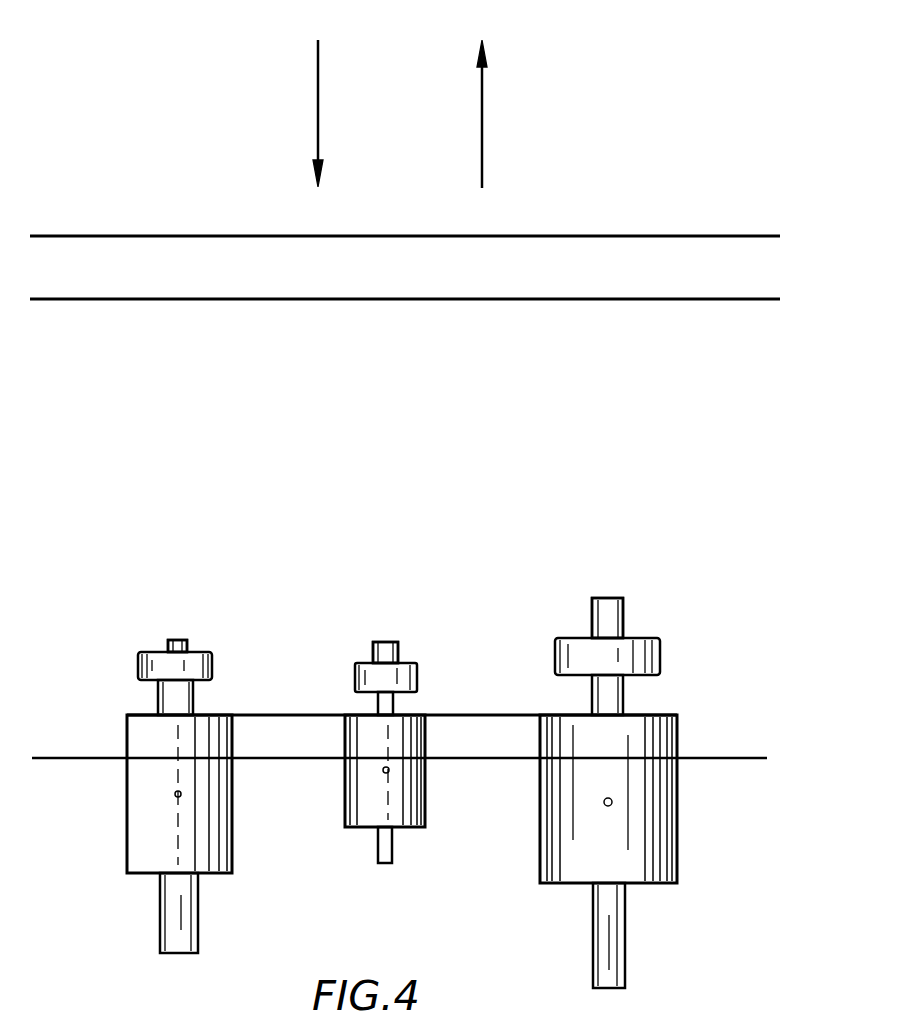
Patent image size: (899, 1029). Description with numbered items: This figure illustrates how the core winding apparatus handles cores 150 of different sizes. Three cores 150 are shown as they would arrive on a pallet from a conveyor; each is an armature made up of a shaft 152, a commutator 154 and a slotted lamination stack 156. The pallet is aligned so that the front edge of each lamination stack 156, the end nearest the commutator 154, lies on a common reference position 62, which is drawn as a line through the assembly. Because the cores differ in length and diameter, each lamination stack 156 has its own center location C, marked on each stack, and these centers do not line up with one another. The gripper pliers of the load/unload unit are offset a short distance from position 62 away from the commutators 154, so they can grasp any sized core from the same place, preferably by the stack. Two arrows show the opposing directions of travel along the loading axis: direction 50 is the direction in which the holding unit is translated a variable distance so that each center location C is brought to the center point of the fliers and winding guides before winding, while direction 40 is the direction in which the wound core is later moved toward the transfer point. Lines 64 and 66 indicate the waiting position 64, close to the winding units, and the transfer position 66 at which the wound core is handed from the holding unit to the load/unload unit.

The direction 40 is at (319, 94).
The direction 50 is at (480, 94).
The position 62 is at (683, 718).
The position 64 is at (420, 303).
The position 66 is at (420, 240).
The core 150 is at (193, 614).
The shaft 152 is at (190, 641).
The commutator 154 is at (213, 670).
The lamination stack 156 is at (232, 835).
The center location C is at (181, 793).